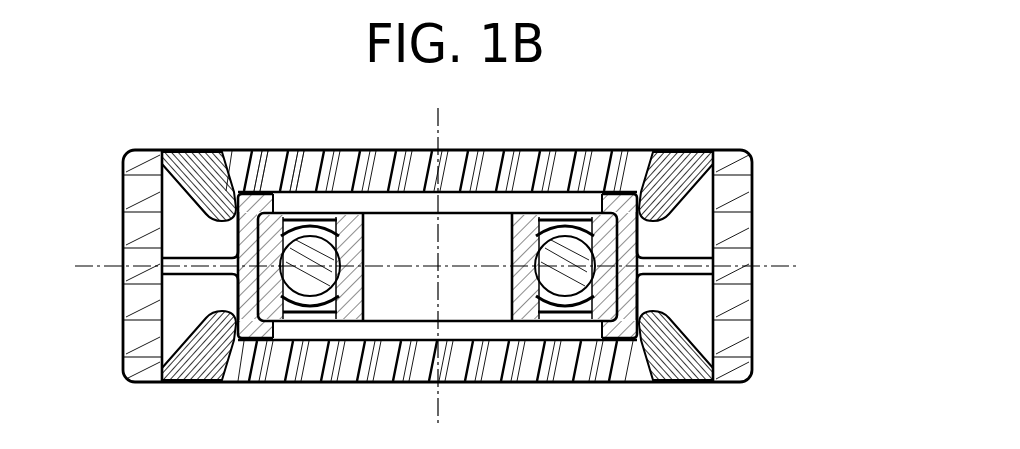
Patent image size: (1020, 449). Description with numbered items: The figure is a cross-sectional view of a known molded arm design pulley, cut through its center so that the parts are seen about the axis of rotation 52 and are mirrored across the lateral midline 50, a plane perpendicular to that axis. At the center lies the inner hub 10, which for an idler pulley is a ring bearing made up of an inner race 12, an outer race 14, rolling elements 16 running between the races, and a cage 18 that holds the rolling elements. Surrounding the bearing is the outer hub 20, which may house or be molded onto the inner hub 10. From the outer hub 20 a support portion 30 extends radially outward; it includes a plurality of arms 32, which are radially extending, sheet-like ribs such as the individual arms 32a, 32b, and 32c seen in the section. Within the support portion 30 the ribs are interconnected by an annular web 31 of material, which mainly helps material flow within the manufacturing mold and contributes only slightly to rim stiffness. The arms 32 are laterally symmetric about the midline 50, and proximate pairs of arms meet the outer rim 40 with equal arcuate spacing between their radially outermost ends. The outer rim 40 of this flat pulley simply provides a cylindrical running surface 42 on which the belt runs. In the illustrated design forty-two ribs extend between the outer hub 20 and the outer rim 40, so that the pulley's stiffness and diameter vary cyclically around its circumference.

The inner hub 10 is at (571, 318).
The inner race 12 is at (291, 332).
The outer race 14 is at (267, 298).
The rolling elements 16 is at (308, 290).
The cage 18 is at (566, 213).
The outer hub 20 is at (623, 203).
The support portion 30 is at (697, 202).
The arms 32 is at (697, 202).
The arm 32a is at (293, 168).
The arm 32b is at (271, 196).
The arm 32c is at (215, 156).
The annular web 31 is at (677, 258).
The outer rim 40 is at (733, 347).
The running surface 42 is at (751, 296).
The lateral midline 50 is at (790, 266).
The axis of rotation 52 is at (438, 110).